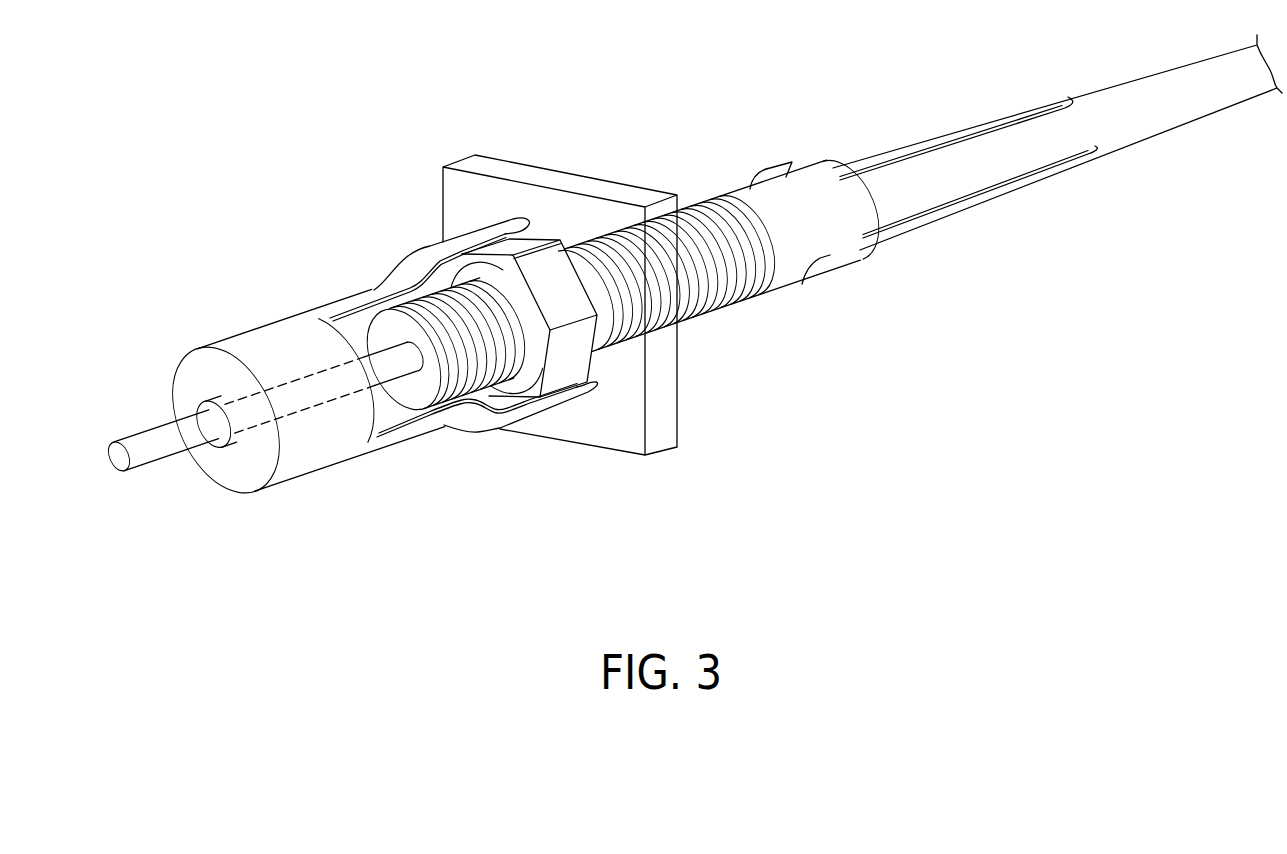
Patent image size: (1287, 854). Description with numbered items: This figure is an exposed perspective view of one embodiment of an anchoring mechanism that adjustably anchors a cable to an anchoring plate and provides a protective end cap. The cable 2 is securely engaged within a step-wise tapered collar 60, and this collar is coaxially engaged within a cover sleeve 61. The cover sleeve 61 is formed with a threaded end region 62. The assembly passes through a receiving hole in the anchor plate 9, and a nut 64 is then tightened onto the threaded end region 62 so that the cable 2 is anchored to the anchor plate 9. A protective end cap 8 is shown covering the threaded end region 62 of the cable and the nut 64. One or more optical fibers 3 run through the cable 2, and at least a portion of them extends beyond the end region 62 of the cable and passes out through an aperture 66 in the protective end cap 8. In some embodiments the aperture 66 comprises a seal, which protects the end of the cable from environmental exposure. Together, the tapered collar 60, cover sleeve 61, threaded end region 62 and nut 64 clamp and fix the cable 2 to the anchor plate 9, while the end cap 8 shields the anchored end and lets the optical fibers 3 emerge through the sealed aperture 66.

The cable 2 is at (1157, 123).
The optical fibers 3 is at (298, 413).
The protective end cap 8 is at (327, 457).
The anchor plate 9 is at (625, 430).
The step-wise tapered collar 60 is at (917, 143).
The cover sleeve 61 is at (832, 265).
The threaded end region 62 is at (717, 307).
The nut 64 is at (502, 250).
The aperture 66 is at (213, 402).